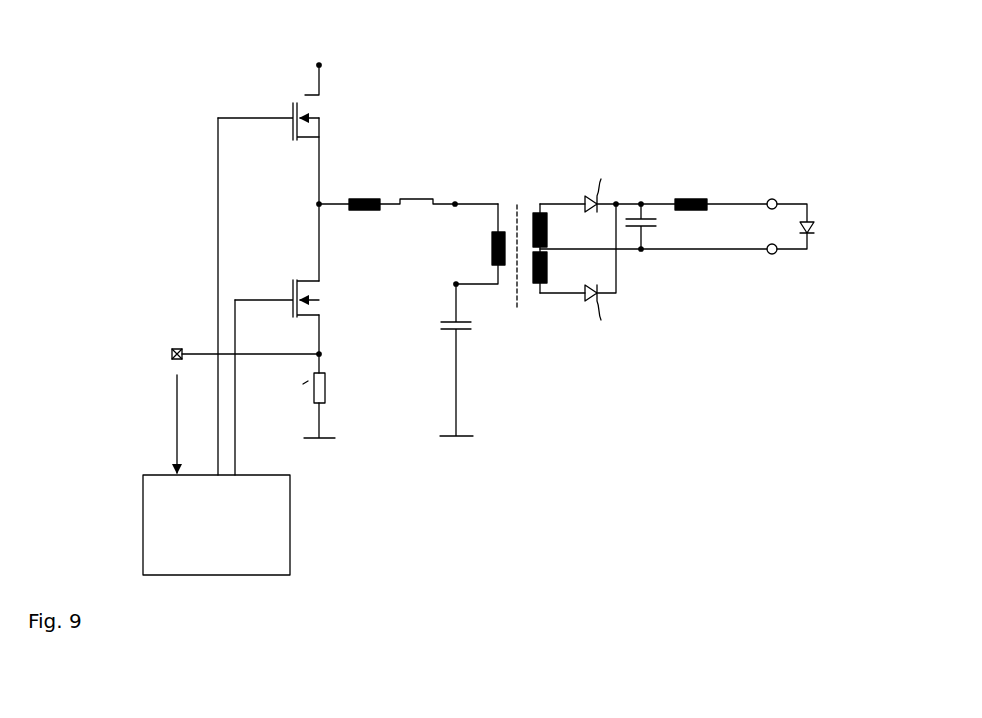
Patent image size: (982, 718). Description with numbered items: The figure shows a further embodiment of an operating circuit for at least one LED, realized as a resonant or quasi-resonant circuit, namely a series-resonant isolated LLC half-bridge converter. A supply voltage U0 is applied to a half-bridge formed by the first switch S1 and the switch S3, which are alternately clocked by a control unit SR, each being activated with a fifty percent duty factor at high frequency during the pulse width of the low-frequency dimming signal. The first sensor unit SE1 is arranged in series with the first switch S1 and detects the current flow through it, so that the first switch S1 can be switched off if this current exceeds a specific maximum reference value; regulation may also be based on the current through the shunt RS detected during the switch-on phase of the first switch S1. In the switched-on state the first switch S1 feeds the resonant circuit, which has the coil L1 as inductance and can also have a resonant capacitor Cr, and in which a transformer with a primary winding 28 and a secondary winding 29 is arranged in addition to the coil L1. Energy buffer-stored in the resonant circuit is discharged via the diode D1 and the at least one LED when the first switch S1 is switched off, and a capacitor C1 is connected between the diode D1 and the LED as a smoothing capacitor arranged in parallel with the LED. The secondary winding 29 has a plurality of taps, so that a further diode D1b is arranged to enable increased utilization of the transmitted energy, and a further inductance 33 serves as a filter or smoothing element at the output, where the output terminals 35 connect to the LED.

The transformer primary winding 28 is at (509, 273).
The secondary winding 29 is at (531, 202).
The inductance 33 is at (689, 198).
The output terminals 35 is at (772, 198).
The supply voltage U0 is at (320, 54).
The switch S3 is at (268, 103).
The first switch S1 is at (277, 279).
The first sensor unit SE1 is at (281, 343).
The shunt RS is at (294, 405).
The control circuit SR is at (216, 525).
The coil L1 is at (364, 200).
The resonant capacitor Cr is at (440, 319).
The diode D1 is at (597, 175).
The diode D1b is at (609, 322).
The capacitor C1 is at (658, 232).
The element LED is at (814, 226).